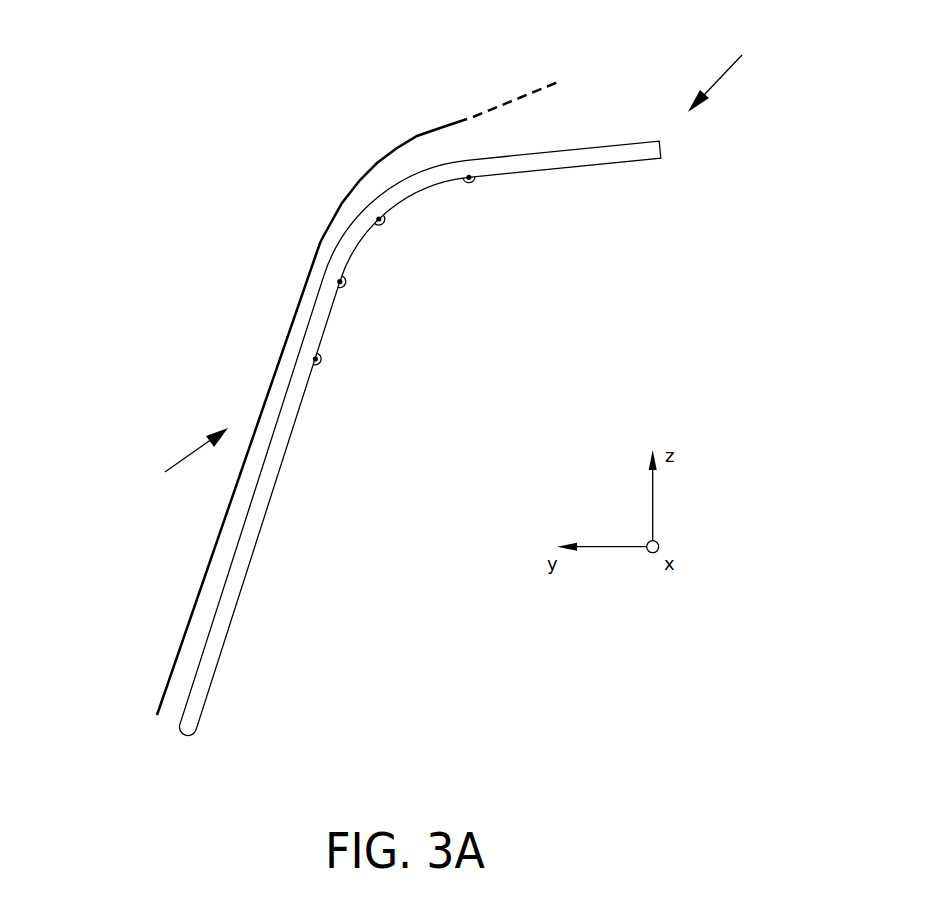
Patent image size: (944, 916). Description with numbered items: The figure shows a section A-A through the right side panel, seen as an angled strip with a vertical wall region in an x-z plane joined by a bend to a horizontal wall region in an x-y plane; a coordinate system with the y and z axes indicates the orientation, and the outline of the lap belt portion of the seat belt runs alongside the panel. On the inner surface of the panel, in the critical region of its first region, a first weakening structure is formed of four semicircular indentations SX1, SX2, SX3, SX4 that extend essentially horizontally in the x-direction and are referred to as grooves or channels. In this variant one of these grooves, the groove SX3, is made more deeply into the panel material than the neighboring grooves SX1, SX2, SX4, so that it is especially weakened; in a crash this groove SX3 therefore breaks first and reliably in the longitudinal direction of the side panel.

The section A-A is at (495, 69).
The indentation SX1 is at (470, 178).
The indentation SX2 is at (380, 220).
The indentation SX3 is at (341, 283).
The indentation SX4 is at (317, 360).